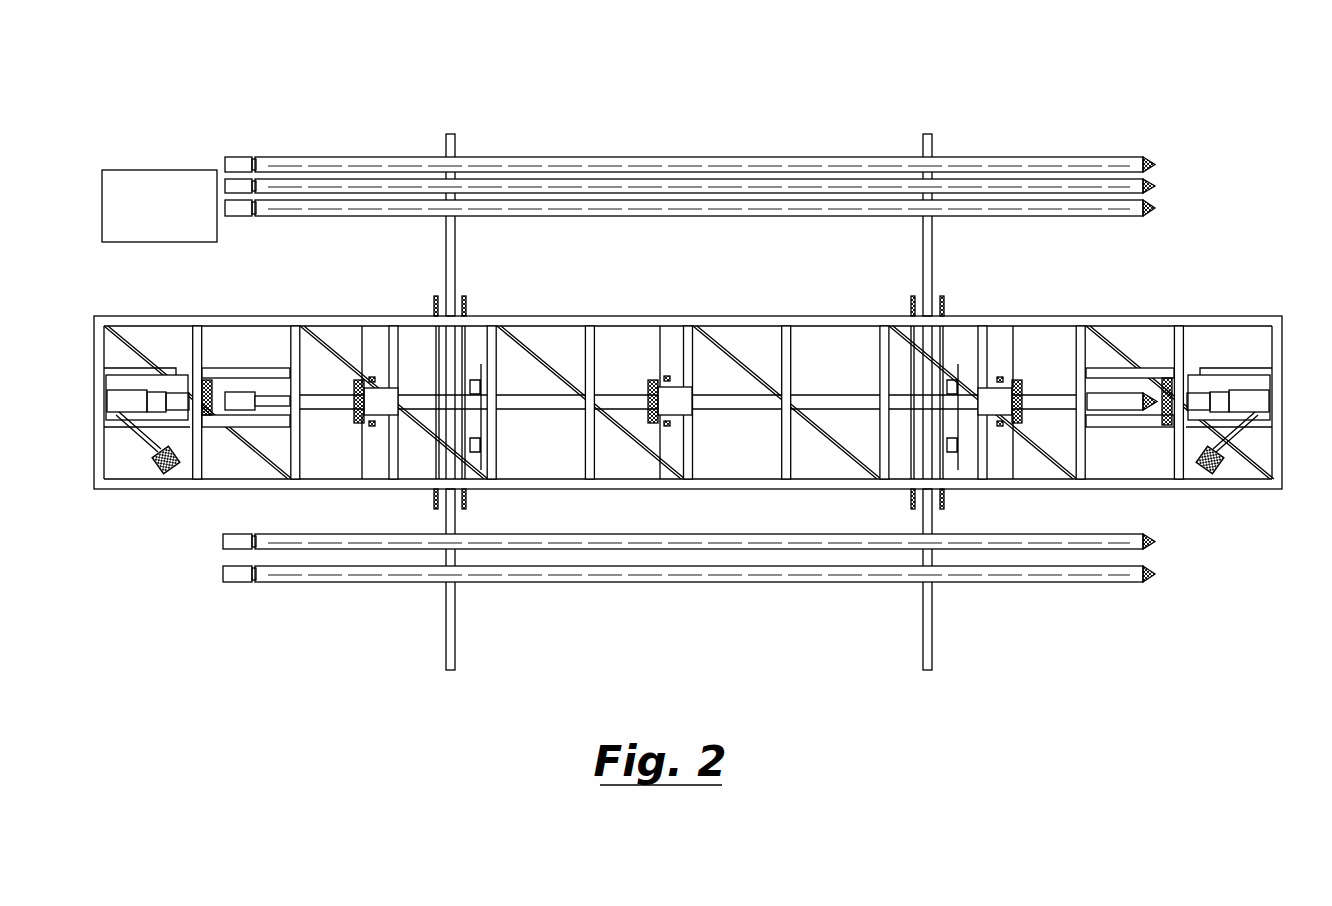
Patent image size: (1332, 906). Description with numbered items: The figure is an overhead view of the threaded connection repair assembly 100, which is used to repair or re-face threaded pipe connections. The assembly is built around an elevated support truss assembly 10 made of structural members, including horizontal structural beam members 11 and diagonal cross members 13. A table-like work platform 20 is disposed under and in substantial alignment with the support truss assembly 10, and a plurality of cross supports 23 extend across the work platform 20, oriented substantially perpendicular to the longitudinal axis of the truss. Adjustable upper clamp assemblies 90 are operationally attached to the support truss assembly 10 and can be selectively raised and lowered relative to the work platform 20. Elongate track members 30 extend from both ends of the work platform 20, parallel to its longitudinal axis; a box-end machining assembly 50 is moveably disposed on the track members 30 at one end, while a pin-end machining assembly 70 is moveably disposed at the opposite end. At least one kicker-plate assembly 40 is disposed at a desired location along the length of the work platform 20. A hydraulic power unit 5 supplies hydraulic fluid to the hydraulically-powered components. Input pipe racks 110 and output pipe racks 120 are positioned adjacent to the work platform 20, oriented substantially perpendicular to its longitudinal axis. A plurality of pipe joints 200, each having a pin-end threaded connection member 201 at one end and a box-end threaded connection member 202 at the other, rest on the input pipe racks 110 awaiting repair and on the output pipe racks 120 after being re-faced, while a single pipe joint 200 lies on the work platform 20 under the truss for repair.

The hydraulic power unit 5 is at (123, 218).
The support truss assembly 10 is at (685, 392).
The horizontal structural beam members 11 is at (283, 316).
The diagonal cross members 13 is at (543, 358).
The work platform 20 is at (307, 453).
The cross supports 23 is at (372, 345).
The track members 30 is at (250, 363).
The kicker-plate assembly 40 is at (478, 375).
The box-end machining assembly 50 is at (126, 398).
The pin-end machining assembly 70 is at (1247, 398).
The upper clamp assemblies 90 is at (345, 385).
The threaded connection repair assembly 100 is at (722, 108).
The input pipe racks 110 is at (452, 605).
The output pipe racks 120 is at (455, 148).
The pipe joints 200 is at (588, 158).
The pin-end threaded connection member 201 is at (1155, 161).
The box-end threaded connection member 202 is at (240, 157).